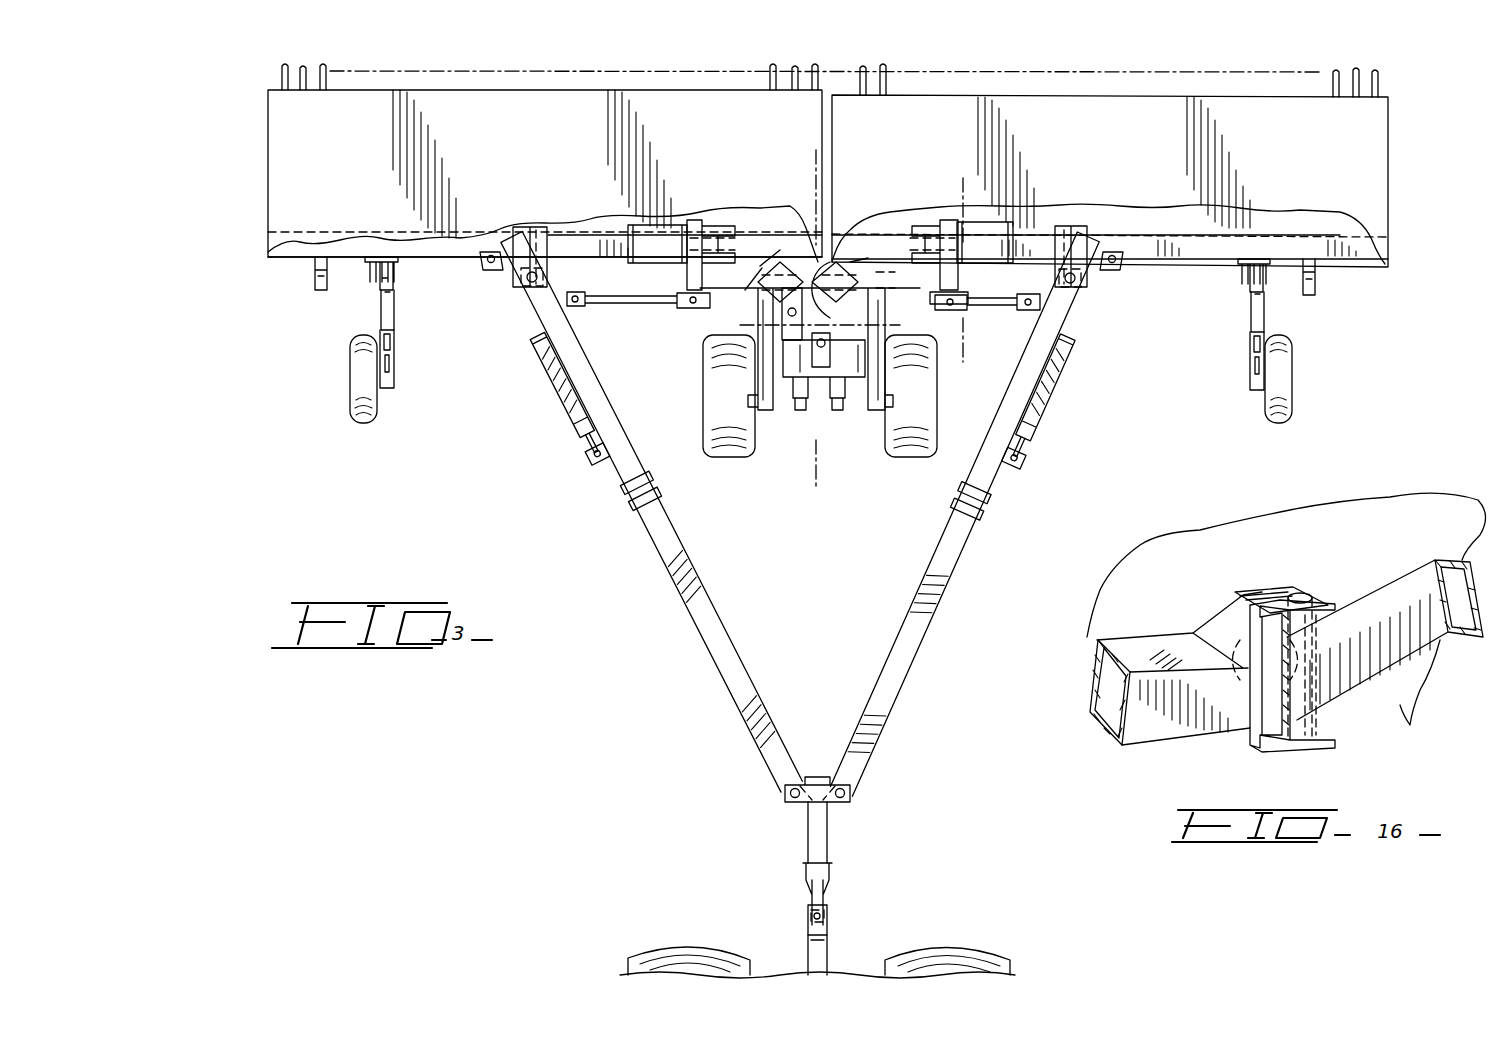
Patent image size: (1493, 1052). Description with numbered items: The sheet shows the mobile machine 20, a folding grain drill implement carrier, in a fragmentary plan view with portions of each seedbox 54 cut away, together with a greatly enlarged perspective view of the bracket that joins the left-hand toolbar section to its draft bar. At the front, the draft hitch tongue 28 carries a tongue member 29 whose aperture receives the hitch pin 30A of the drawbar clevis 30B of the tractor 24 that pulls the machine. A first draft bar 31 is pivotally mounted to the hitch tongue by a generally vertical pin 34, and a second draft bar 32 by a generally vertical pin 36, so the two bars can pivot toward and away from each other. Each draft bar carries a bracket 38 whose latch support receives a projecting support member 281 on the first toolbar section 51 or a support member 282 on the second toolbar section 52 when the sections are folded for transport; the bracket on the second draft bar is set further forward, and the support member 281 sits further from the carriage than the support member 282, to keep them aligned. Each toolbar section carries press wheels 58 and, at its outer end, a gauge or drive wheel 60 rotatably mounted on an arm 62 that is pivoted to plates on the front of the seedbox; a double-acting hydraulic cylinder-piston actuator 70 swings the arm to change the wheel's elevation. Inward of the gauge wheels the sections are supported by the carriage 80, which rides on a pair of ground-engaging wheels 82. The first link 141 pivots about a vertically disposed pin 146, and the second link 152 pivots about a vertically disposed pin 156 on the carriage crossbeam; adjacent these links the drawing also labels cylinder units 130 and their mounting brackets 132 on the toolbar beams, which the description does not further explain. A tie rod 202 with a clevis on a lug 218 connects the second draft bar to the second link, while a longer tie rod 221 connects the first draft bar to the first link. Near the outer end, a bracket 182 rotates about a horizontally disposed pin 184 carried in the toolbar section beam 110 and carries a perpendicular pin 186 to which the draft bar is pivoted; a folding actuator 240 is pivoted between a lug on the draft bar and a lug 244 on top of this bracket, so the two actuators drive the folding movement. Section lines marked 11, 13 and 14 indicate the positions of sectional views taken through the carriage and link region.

In FIG. 3, the mobile machine 20 is at (268, 360).
In FIG. 3, the tractor 24 is at (970, 940).
In FIG. 3, the draft hitch tongue 28 is at (796, 828).
In FIG. 3, the tongue member 29 is at (824, 904).
In FIG. 3, the hitch pin 30A is at (822, 916).
In FIG. 3, the drawbar clevis 30B is at (826, 958).
In FIG. 3, the first draft bar 31 is at (645, 484).
In FIG. 16, the first draft bar 31 is at (1398, 578).
In FIG. 3, the second draft bar 32 is at (956, 514).
In FIG. 3, the vertical pin 34 is at (796, 780).
In FIG. 3, the vertical pin 36 is at (848, 800).
In FIG. 3, the bracket 38 is at (606, 495).
In FIG. 3, the first toolbar section 51 is at (254, 200).
In FIG. 16, the first toolbar section 51 is at (1083, 621).
In FIG. 3, the second toolbar section 52 is at (1400, 188).
In FIG. 3, the seedbox 54 is at (298, 158).
In FIG. 16, the seedbox 54 is at (1150, 548).
In FIG. 3, the press wheels 58 is at (320, 72).
In FIG. 3, the gauge or drive wheel 60 is at (362, 420).
In FIG. 3, the arm 62 is at (394, 372).
In FIG. 3, the hydraulic cylinder-piston actuator 70 is at (392, 310).
In FIG. 3, the carriage 80 is at (746, 330).
In FIG. 3, the ground-engaging wheels 82 is at (712, 418).
In FIG. 3, the toolbar section beam 110 is at (304, 252).
In FIG. 16, the toolbar section beam 110 is at (1160, 735).
In FIG. 3, the hydraulic cylinder 130 is at (692, 222).
In FIG. 3, the cylinder bracket 132 is at (827, 262).
In FIG. 3, the first link 141 is at (788, 275).
In FIG. 3, the vertically disposed pin 146 is at (785, 314).
In FIG. 3, the second link 152 is at (868, 282).
In FIG. 3, the vertically disposed pin 156 is at (830, 340).
In FIG. 3, the bracket 182 is at (558, 267).
In FIG. 16, the bracket 182 is at (1264, 753).
In FIG. 16, the horizontally disposed pin 184 is at (1278, 655).
In FIG. 3, the pin 186 is at (527, 280).
In FIG. 16, the pin 186 is at (1310, 592).
In FIG. 3, the tie rod 202 is at (975, 308).
In FIG. 3, the lug 218 is at (1045, 301).
In FIG. 3, the tie rod 221 is at (604, 300).
In FIG. 3, the hydraulic cylinder-piston actuator 240 is at (552, 376).
In FIG. 16, the lug 244 is at (1240, 590).
In FIG. 3, the support member 281 is at (321, 282).
In FIG. 3, the support member 282 is at (1312, 292).
In FIG. 3, the section line 11 is at (952, 194).
In FIG. 3, the section line 13 is at (843, 217).
In FIG. 3, the section line 14 is at (834, 179).